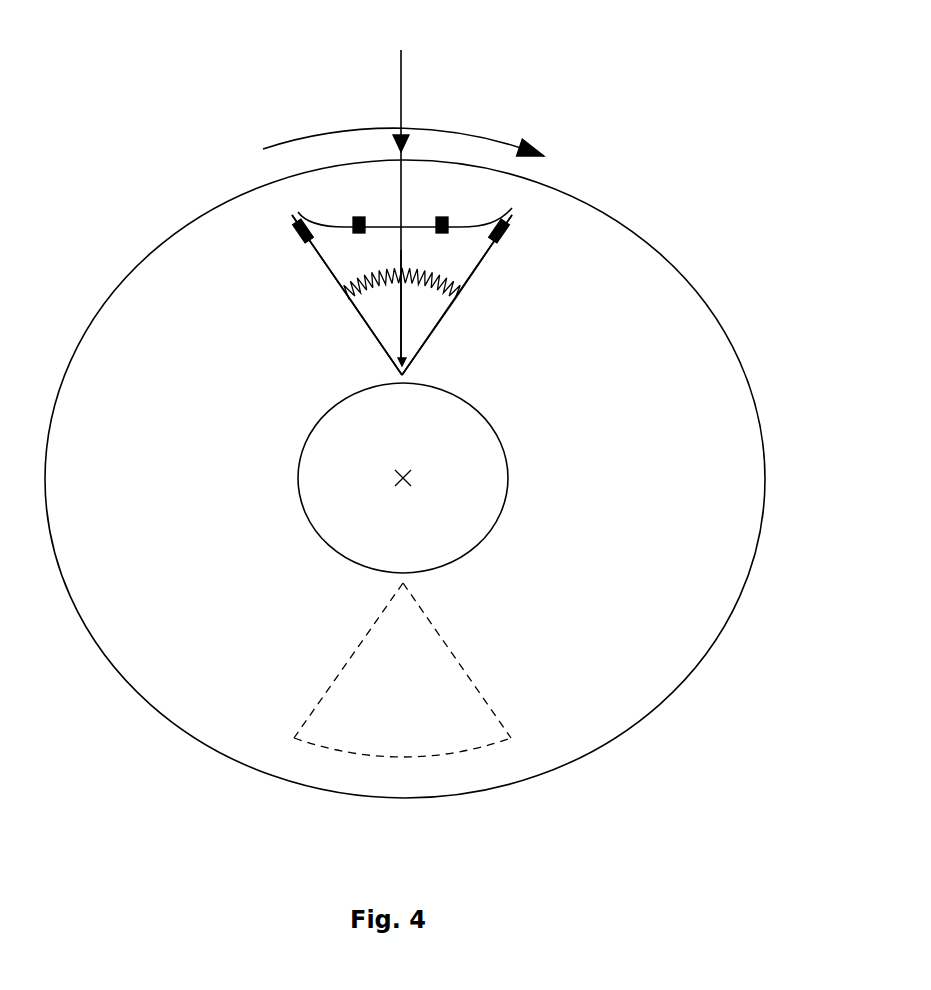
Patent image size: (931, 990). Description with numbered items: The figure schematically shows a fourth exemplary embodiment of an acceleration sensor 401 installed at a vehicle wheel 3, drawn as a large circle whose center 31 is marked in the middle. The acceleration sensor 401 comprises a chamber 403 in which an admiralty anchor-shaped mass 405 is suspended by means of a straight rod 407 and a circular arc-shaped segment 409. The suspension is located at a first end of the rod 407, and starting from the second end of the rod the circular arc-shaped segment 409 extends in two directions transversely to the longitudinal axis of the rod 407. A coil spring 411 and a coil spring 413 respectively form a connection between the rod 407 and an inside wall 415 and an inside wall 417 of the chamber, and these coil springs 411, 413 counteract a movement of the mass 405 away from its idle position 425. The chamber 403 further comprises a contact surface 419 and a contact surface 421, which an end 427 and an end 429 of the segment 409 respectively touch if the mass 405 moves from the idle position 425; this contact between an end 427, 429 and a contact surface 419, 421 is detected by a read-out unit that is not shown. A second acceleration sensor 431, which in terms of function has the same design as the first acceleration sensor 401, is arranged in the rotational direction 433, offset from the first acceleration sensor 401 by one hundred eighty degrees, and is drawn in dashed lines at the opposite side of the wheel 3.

The vehicle wheel 3 is at (738, 600).
The center of the circular arc segment 31 is at (397, 481).
The acceleration sensor 401 is at (548, 193).
The chamber 403 is at (405, 362).
The admiralty anchor-shaped mass 405 is at (425, 218).
The straight rod 407 is at (403, 317).
The circular arc-shaped segment 409 is at (380, 218).
The coil spring 411 is at (345, 303).
The coil spring 413 is at (458, 290).
The inside wall 415 is at (320, 258).
The inside wall 417 is at (487, 250).
The contact surface 419 is at (300, 218).
The contact surface 421 is at (500, 220).
The idle position 425 is at (403, 95).
The end of the segment 427 is at (318, 208).
The end of the segment 429 is at (487, 212).
The second acceleration sensor 431 is at (492, 712).
The rotational direction 433 is at (294, 145).